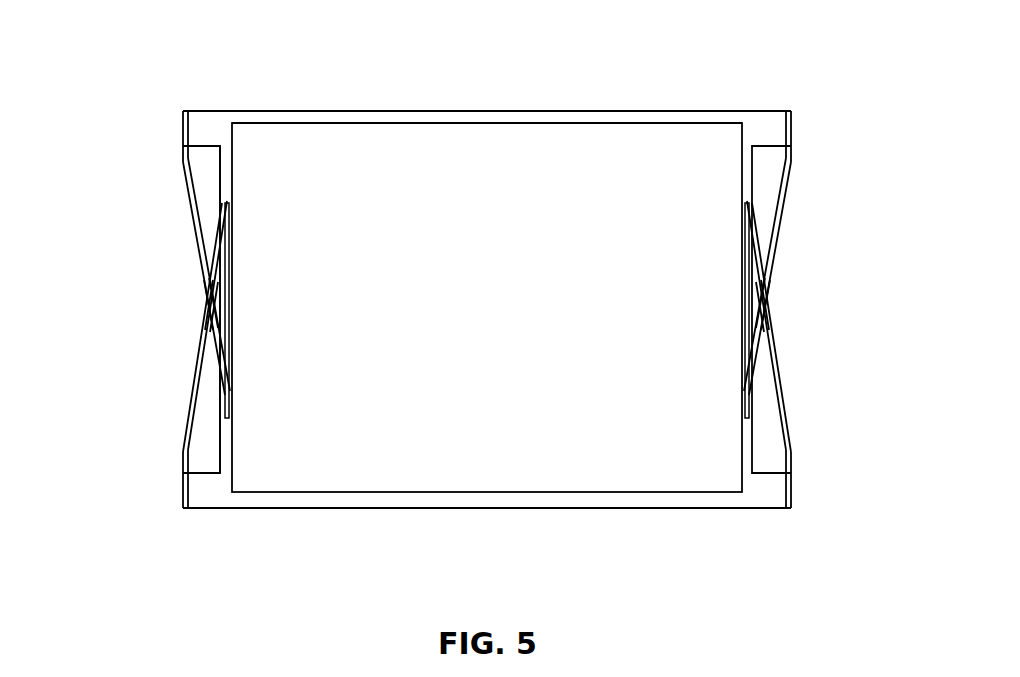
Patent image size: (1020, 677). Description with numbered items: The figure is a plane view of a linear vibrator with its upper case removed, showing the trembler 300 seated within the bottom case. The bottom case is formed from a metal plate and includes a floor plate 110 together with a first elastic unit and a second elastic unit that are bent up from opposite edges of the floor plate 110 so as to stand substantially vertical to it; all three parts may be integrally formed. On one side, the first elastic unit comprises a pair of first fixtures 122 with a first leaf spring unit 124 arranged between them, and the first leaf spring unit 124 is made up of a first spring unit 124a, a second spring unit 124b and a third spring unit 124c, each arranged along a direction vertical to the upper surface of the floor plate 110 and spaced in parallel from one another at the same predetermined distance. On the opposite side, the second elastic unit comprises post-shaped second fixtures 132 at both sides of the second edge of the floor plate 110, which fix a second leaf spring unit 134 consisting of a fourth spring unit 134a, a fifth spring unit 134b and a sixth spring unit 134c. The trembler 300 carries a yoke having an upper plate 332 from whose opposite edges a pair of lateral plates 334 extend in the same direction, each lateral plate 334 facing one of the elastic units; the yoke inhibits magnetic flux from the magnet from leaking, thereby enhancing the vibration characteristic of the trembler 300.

The floor plate 110 is at (574, 499).
The first fixtures 122 is at (183, 129).
The second fixtures 132 is at (791, 130).
The first leaf spring unit 124 is at (136, 305).
The first spring unit 124a is at (197, 247).
The second spring unit 124b is at (210, 306).
The third spring unit 124c is at (193, 386).
The second leaf spring unit 134 is at (839, 305).
The fourth spring unit 134a is at (780, 388).
The fifth spring unit 134b is at (764, 307).
The sixth spring unit 134c is at (778, 241).
The trembler 300 is at (581, 165).
The upper plate 332 is at (386, 152).
The lateral plates 334 is at (226, 140).